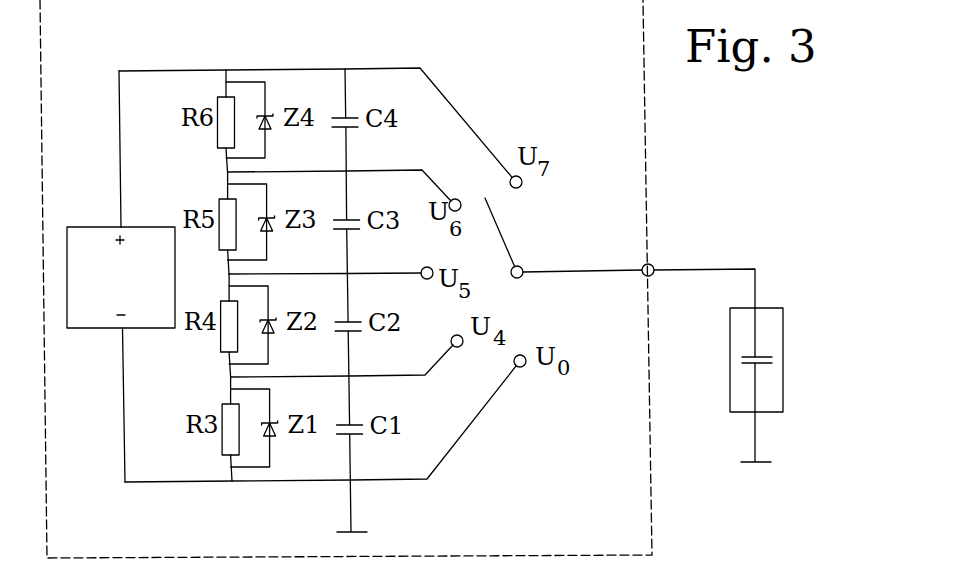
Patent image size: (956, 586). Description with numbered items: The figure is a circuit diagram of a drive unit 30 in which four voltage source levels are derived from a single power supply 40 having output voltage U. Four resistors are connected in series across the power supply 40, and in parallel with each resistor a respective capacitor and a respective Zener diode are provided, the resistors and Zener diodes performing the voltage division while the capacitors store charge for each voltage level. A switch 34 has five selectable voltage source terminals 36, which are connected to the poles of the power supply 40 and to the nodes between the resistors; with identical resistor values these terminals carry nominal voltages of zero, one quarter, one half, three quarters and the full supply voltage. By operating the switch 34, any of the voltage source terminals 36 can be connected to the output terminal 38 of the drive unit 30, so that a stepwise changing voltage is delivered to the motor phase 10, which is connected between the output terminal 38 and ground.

The motor phase 10 is at (773, 403).
The drive unit 30 is at (637, 477).
The switch 34 is at (504, 232).
The voltage source terminals 36 is at (527, 363).
The output terminal 38 is at (651, 263).
The power supply 40 is at (158, 323).